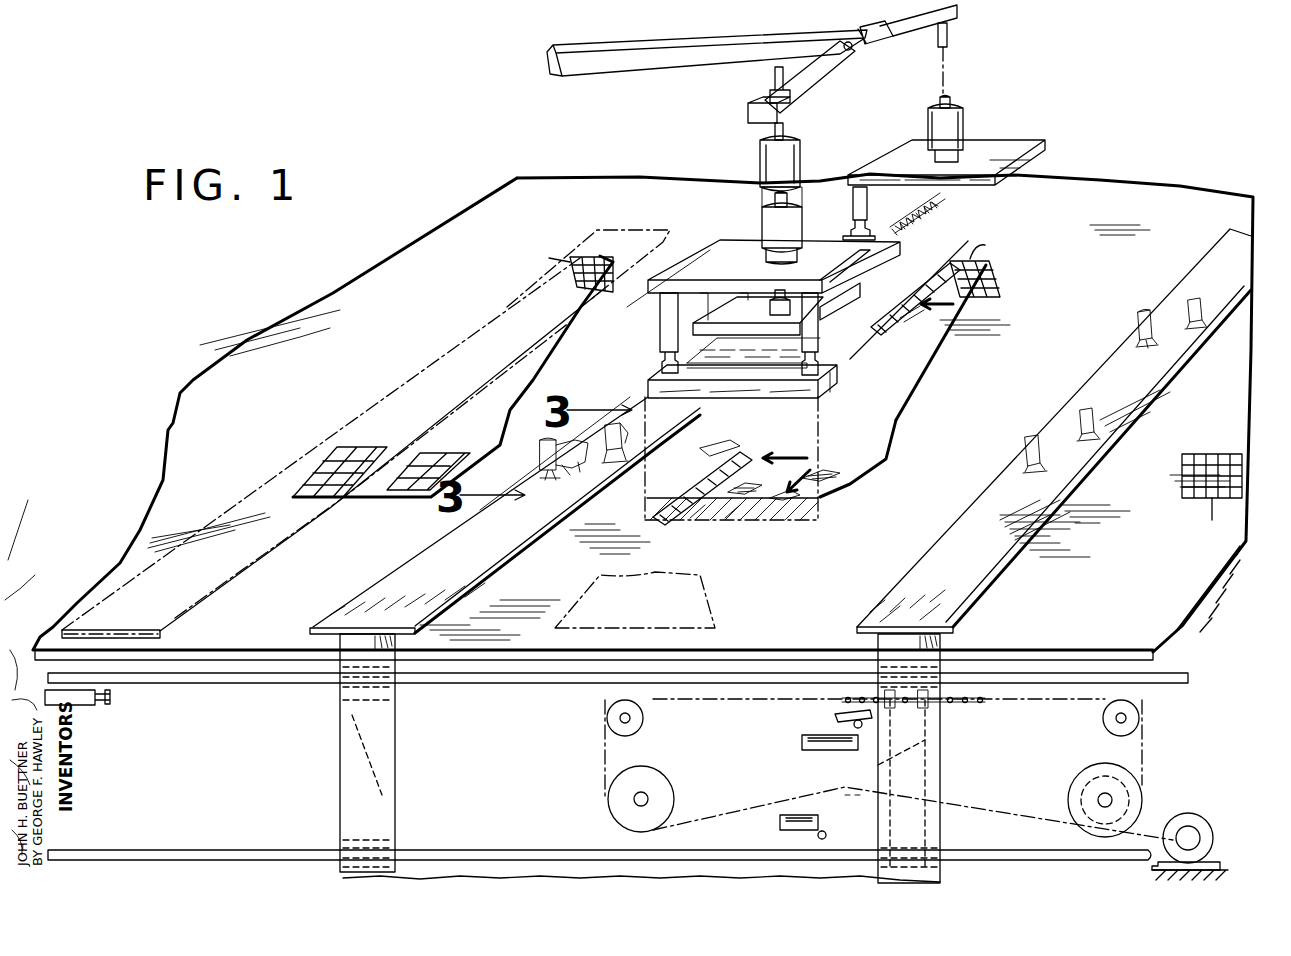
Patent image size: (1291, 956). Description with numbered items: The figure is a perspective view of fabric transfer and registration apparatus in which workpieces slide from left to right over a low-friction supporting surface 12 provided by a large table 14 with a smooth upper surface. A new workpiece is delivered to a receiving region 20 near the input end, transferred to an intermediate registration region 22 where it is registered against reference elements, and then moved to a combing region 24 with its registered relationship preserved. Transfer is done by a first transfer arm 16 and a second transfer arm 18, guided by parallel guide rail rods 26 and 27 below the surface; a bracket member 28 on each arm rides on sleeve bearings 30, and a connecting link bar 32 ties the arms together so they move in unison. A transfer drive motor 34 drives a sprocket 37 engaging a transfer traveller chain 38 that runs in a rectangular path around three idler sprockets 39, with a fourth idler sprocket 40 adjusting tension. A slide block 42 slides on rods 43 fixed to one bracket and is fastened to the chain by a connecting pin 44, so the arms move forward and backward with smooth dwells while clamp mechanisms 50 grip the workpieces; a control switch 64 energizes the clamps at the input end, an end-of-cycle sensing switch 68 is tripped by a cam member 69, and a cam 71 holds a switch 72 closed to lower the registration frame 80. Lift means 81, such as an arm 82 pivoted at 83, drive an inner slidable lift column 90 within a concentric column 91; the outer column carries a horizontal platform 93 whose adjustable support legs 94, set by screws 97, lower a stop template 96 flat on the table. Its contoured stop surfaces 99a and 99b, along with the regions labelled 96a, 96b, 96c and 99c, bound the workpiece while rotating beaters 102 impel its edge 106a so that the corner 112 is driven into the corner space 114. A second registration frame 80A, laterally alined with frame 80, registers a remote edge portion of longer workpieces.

The low-friction supporting surface 12 is at (233, 352).
The table 14 is at (215, 652).
The first transfer arm 16 is at (148, 570).
The second transfer arm 18 is at (910, 580).
The receiving region 20 is at (414, 352).
The registration region 22 is at (938, 370).
The combing region 24 is at (1240, 384).
The guide rail rod 26 is at (500, 683).
The guide rail rod 27 is at (472, 850).
The bracket member 28 is at (380, 745).
The sleeve bearing 30 is at (345, 707).
The connecting link bar 32 is at (560, 876).
The transfer drive motor 34 is at (1196, 792).
The sprocket 37 is at (1072, 792).
The transfer traveller chain 38 is at (760, 802).
The idler sprocket 39 is at (644, 722).
The fourth idler sprocket 40 is at (840, 792).
The slide block 42 is at (935, 719).
The rods 43 is at (878, 752).
The connecting pin 44 is at (909, 758).
The clamp mechanism 50 is at (1196, 292).
The control switch 64 is at (90, 705).
The end-of-cycle sensing switch 68 is at (800, 747).
The cam member 69 is at (834, 719).
The cam 71 is at (839, 835).
The switch 72 is at (780, 824).
The registration frame 80 is at (707, 237).
The second registration frame 80A is at (1018, 123).
The lift means 81 is at (557, 36).
The arm 82 is at (693, 44).
The pivot 83 is at (850, 60).
The inner slidable lift column 90 is at (785, 129).
The concentric column 91 is at (802, 156).
The horizontal platform 93 is at (738, 263).
The support legs 94 is at (660, 322).
The stop template 96 is at (847, 241).
The guide 96a is at (738, 452).
The guide 96b is at (810, 402).
The guide 96c is at (952, 263).
The screw 97 is at (665, 371).
The stop surface 99a is at (705, 470).
The stop surface 99b is at (792, 517).
The die pad 99c is at (927, 301).
The rotating beaters 102 is at (918, 224).
The edge 106a is at (812, 422).
The corner or vertex 112 is at (745, 514).
The corner or vertex space 114 is at (712, 512).